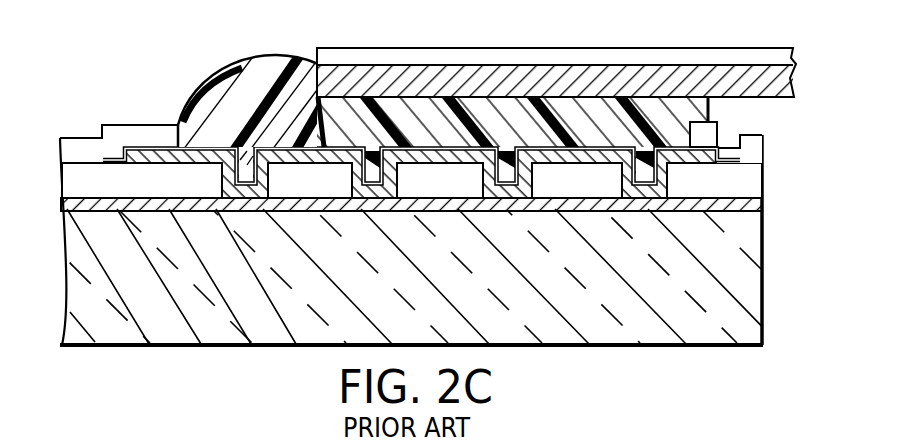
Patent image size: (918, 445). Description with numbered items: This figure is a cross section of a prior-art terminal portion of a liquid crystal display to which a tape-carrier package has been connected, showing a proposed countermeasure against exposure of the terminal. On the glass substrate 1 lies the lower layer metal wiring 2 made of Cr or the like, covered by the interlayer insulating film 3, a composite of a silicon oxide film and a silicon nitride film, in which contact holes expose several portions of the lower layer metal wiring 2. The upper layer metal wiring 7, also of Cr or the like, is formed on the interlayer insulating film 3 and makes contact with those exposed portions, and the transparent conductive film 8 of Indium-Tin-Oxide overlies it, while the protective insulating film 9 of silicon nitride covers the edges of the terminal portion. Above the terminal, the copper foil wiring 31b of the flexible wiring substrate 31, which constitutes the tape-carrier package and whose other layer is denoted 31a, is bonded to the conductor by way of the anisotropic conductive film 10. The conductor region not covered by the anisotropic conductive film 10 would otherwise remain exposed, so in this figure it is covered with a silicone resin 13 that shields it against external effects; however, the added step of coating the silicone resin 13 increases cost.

The glass substrate 1 is at (742, 318).
The lower layer metal wiring 2 is at (752, 203).
The interlayer insulating film 3 is at (753, 177).
The upper layer metal wiring 7 is at (703, 152).
The transparent conductive film 8 is at (152, 146).
The protective insulating film 9 is at (105, 143).
The anisotropic conductive film 10 is at (505, 118).
The silicone resin 13 is at (257, 82).
The flexible wiring substrate 31 is at (393, 48).
The base film 31a is at (640, 53).
The copper foil wiring 31b is at (598, 78).